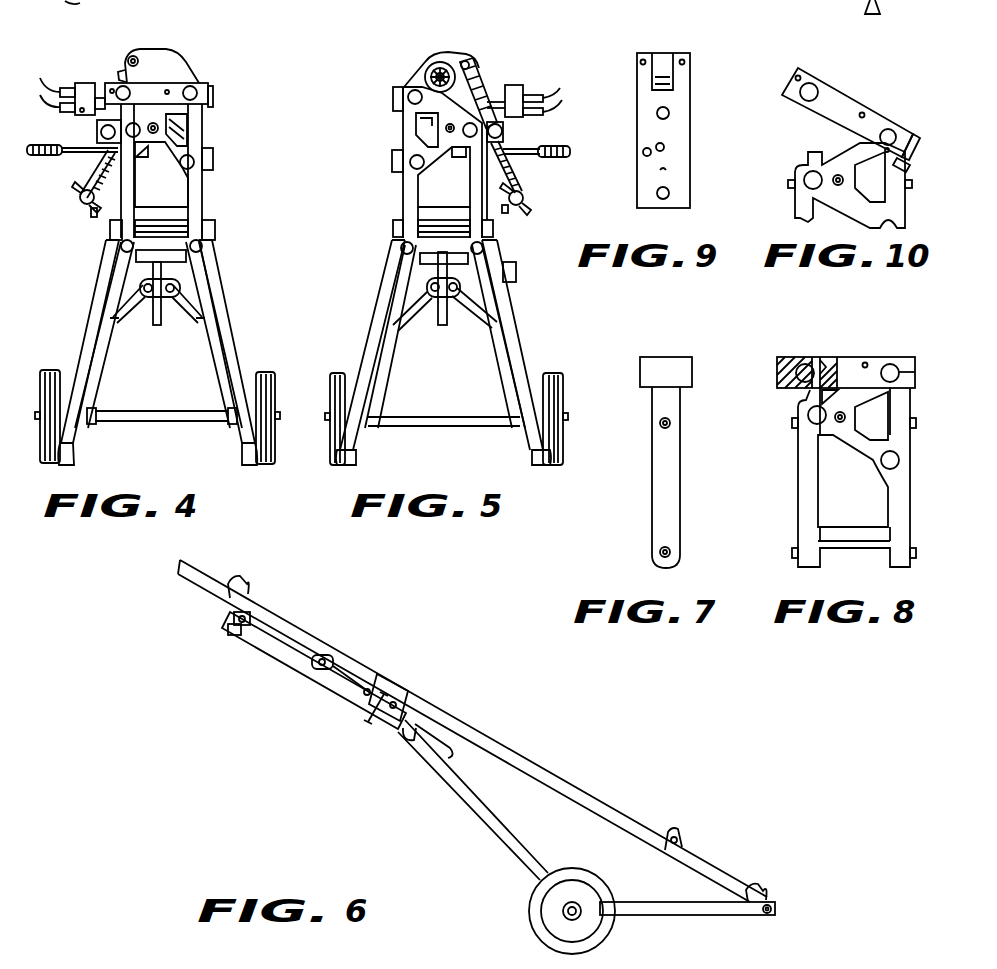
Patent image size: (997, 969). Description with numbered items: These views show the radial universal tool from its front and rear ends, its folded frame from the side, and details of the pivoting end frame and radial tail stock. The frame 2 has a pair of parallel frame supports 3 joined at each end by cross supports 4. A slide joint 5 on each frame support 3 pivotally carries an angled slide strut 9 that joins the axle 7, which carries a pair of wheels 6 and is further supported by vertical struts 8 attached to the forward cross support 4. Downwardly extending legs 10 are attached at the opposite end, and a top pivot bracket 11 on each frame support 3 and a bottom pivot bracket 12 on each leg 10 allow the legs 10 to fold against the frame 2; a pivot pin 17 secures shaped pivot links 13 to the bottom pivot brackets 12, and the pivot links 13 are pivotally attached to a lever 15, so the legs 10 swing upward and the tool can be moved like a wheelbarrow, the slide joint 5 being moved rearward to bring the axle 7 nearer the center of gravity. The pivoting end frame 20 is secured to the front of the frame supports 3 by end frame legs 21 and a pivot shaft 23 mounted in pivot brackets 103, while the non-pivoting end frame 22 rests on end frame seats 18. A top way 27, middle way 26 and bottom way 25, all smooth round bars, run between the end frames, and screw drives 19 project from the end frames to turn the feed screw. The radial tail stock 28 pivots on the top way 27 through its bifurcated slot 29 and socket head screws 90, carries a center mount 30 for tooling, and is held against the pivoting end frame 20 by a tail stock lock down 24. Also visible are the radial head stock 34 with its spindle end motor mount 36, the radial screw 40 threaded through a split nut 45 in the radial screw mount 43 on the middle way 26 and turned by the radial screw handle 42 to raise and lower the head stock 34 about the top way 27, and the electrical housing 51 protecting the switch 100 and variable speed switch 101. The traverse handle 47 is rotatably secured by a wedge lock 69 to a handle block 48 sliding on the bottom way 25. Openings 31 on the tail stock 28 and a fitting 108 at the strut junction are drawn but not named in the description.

In FIG. 6, the frame 2 is at (494, 722).
In FIG. 6, the frame supports 3 is at (580, 790).
In FIG. 4, the cross supports 4 is at (196, 225).
In FIG. 5, the cross supports 4 is at (470, 262).
In FIG. 6, the slide joint 5 is at (398, 686).
In FIG. 4, the wheels 6 is at (60, 368).
In FIG. 5, the wheels 6 is at (338, 370).
In FIG. 6, the wheels 6 is at (540, 916).
In FIG. 4, the axle 7 is at (78, 5).
In FIG. 5, the axle 7 is at (452, 416).
In FIG. 6, the axle 7 is at (588, 918).
In FIG. 4, the vertical struts 8 is at (94, 305).
In FIG. 5, the vertical struts 8 is at (378, 305).
In FIG. 6, the vertical struts 8 is at (708, 916).
In FIG. 4, the slide strut 9 is at (100, 362).
In FIG. 5, the slide strut 9 is at (380, 382).
In FIG. 6, the slide strut 9 is at (522, 855).
In FIG. 4, the legs 10 is at (77, 438).
In FIG. 5, the legs 10 is at (354, 440).
In FIG. 6, the legs 10 is at (290, 666).
In FIG. 6, the top pivot bracket 11 is at (233, 617).
In FIG. 6, the bottom pivot bracket 12 is at (330, 662).
In FIG. 4, the pivot links 13 is at (126, 313).
In FIG. 5, the pivot links 13 is at (408, 315).
In FIG. 6, the lever 15 is at (448, 752).
In FIG. 6, the pivot pin 17 is at (236, 636).
In FIG. 6, the end frame seats 18 is at (250, 587).
In FIG. 4, the screw drives 19 is at (44, 92).
In FIG. 5, the screw drives 19 is at (445, 128).
In FIG. 4, the pivoting end frame 20 is at (232, 144).
In FIG. 5, the pivoting end frame 20 is at (445, 162).
In FIG. 10, the pivoting end frame 20 is at (793, 162).
In FIG. 7, the pivoting end frame 20 is at (692, 520).
In FIG. 8, the pivoting end frame 20 is at (790, 530).
In FIG. 4, the end frame legs 21 is at (115, 238).
In FIG. 5, the end frame legs 21 is at (405, 228).
In FIG. 7, the end frame legs 21 is at (681, 556).
In FIG. 8, the end frame legs 21 is at (796, 556).
In FIG. 5, the non-pivoting end frame 22 is at (396, 200).
In FIG. 4, the pivot shaft 23 is at (151, 222).
In FIG. 5, the pivot shaft 23 is at (444, 230).
In FIG. 9, the tail stock lock down 24 is at (664, 146).
In FIG. 4, the bottom way 25 is at (191, 167).
In FIG. 5, the bottom way 25 is at (410, 163).
In FIG. 8, the bottom way 25 is at (898, 466).
In FIG. 4, the middle way 26 is at (133, 138).
In FIG. 5, the middle way 26 is at (472, 138).
In FIG. 10, the middle way 26 is at (808, 186).
In FIG. 8, the middle way 26 is at (812, 410).
In FIG. 4, the top way 27 is at (196, 90).
In FIG. 5, the top way 27 is at (408, 98).
In FIG. 10, the top way 27 is at (892, 130).
In FIG. 8, the top way 27 is at (894, 364).
In FIG. 4, the radial tail stock 28 is at (218, 96).
In FIG. 5, the radial tail stock 28 is at (395, 74).
In FIG. 9, the radial tail stock 28 is at (698, 62).
In FIG. 10, the radial tail stock 28 is at (792, 62).
In FIG. 7, the radial tail stock 28 is at (624, 368).
In FIG. 8, the radial tail stock 28 is at (776, 372).
In FIG. 9, the bifurcated slot 29 is at (641, 57).
In FIG. 10, the bifurcated slot 29 is at (912, 142).
In FIG. 8, the bifurcated slot 29 is at (916, 378).
In FIG. 4, the center mount 30 is at (120, 88).
In FIG. 10, the center mount 30 is at (814, 88).
In FIG. 8, the center mount 30 is at (803, 364).
In FIG. 9, the hole 31 is at (670, 113).
In FIG. 4, the radial head stock 34 is at (176, 32).
In FIG. 5, the radial head stock 34 is at (466, 33).
In FIG. 4, the spindle end motor mount 36 is at (146, 55).
In FIG. 4, the radial screw 40 is at (92, 175).
In FIG. 5, the radial screw 40 is at (524, 170).
In FIG. 4, the radial screw handle 42 is at (82, 204).
In FIG. 5, the radial screw handle 42 is at (528, 196).
In FIG. 4, the radial screw mount 43 is at (97, 138).
In FIG. 5, the radial screw mount 43 is at (503, 133).
In FIG. 5, the split nut 45 is at (503, 124).
In FIG. 4, the traverse handle 47 is at (36, 157).
In FIG. 5, the traverse handle 47 is at (570, 152).
In FIG. 4, the handle block 48 is at (214, 160).
In FIG. 5, the handle block 48 is at (390, 170).
In FIG. 5, the electrical housing 51 is at (452, 60).
In FIG. 9, the wedge lock 69 is at (644, 150).
In FIG. 8, the wedge lock 69 is at (822, 360).
In FIG. 10, the socket head screws 90 is at (788, 186).
In FIG. 8, the socket head screws 90 is at (792, 426).
In FIG. 5, the switch 100 is at (478, 64).
In FIG. 5, the variable speed switch 101 is at (428, 68).
In FIG. 6, the pivot brackets 103 is at (686, 840).
In FIG. 4, the hub 108 is at (166, 305).
In FIG. 5, the hub 108 is at (448, 300).